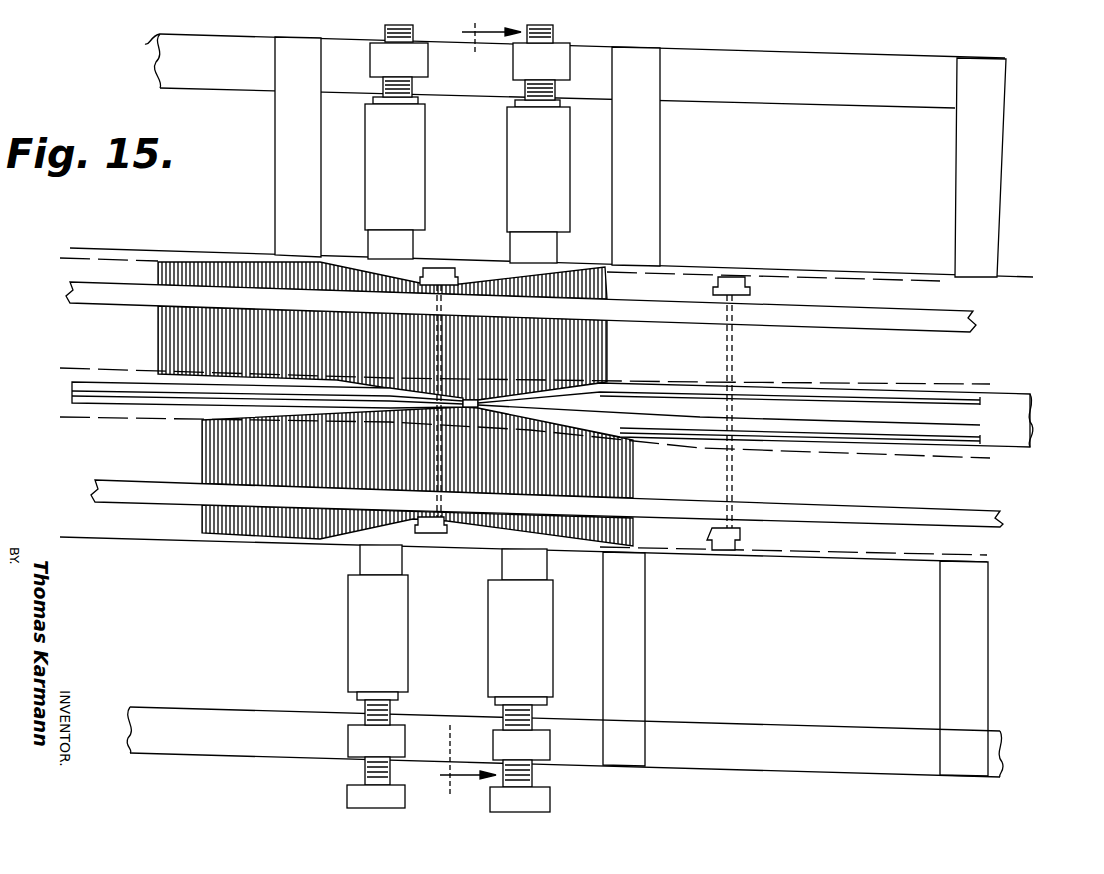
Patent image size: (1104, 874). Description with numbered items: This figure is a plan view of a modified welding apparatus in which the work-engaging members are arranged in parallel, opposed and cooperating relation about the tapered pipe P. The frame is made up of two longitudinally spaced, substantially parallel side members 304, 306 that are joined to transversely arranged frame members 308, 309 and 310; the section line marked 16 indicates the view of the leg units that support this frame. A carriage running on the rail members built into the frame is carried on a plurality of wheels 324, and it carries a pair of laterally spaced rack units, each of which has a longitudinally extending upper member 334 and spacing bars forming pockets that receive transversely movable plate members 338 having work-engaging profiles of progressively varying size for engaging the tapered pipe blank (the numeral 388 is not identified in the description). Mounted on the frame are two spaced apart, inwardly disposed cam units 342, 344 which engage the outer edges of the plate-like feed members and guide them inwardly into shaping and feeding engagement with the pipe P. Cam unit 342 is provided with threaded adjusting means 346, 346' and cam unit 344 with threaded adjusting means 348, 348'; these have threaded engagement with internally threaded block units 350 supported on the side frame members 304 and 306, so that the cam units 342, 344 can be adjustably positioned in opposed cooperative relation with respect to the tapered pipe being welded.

The side member 304 is at (551, 71).
The side member 306 is at (222, 716).
The transversely arranged frame member 308 is at (278, 210).
The transversely arranged frame member 309 is at (654, 200).
The transversely arranged frame member 310 is at (956, 232).
The wheel 324 is at (742, 278).
The upper member 334 is at (980, 316).
The plate member 338 is at (337, 331).
The cam unit 342 is at (450, 548).
The cam unit 344 is at (481, 263).
The threaded adjusting means 346 is at (344, 756).
The threaded adjusting means 346' is at (555, 758).
The threaded adjusting means 348 is at (361, 54).
The threaded adjusting means 348' is at (572, 62).
The internally threaded block unit 350 is at (428, 68).
The lower filler block 388 is at (342, 476).
The pipe P is at (1018, 418).
The section line 16- 16 is at (473, 409).